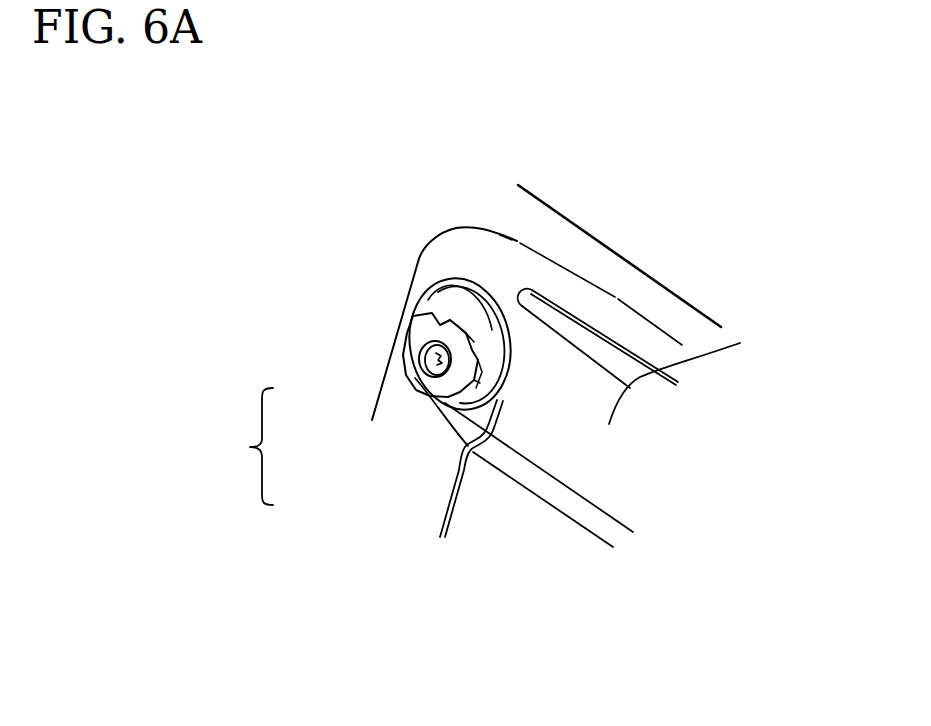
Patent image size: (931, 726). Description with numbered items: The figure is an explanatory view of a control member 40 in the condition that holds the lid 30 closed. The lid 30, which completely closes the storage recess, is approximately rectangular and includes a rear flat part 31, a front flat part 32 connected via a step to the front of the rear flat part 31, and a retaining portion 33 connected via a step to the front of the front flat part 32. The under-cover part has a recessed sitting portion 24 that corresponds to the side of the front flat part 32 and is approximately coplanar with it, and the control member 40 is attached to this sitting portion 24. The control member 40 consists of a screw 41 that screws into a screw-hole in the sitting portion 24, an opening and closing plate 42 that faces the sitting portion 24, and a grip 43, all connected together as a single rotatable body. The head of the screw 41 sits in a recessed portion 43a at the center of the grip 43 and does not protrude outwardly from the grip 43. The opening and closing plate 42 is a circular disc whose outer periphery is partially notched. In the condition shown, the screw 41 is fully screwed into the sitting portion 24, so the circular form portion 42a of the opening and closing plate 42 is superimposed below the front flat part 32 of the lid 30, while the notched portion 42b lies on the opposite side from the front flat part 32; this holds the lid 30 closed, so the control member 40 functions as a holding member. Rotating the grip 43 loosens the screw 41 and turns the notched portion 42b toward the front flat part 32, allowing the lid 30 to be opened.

The sitting portion 24 is at (515, 322).
The lid 30 is at (740, 343).
The rear flat part 31 is at (500, 527).
The front flat part 32 is at (705, 318).
The retaining portion 33 is at (613, 357).
The control member 40 is at (420, 341).
The screw 41 is at (430, 362).
The opening and closing plate 42 is at (472, 412).
The circular form portion 42a is at (495, 361).
The notched portion 42b is at (435, 302).
The grip 43 is at (427, 385).
The recessed portion 43a is at (418, 352).